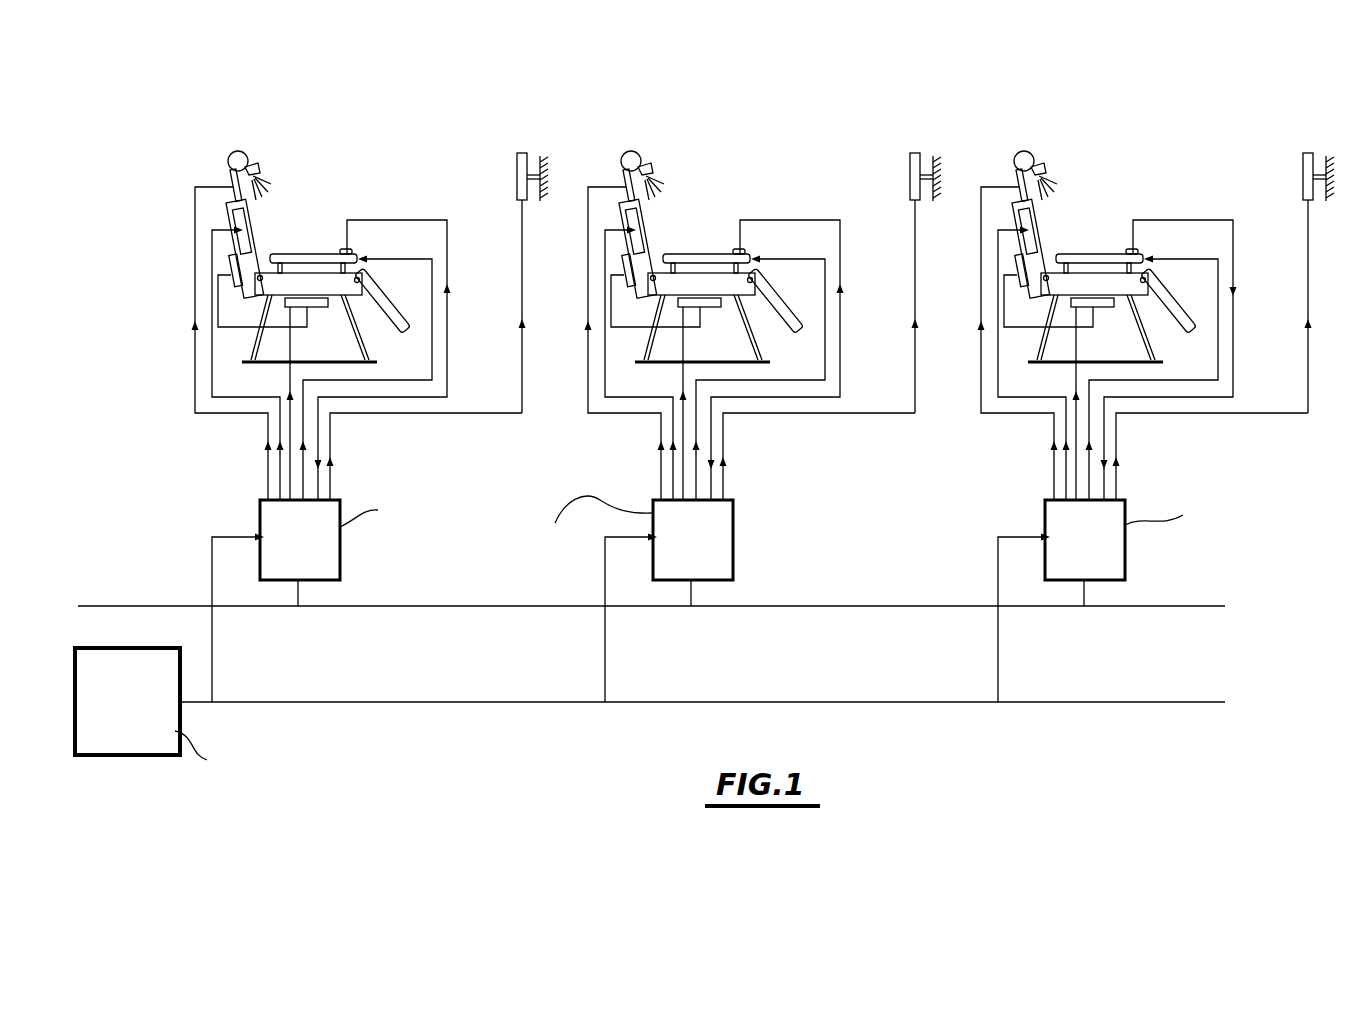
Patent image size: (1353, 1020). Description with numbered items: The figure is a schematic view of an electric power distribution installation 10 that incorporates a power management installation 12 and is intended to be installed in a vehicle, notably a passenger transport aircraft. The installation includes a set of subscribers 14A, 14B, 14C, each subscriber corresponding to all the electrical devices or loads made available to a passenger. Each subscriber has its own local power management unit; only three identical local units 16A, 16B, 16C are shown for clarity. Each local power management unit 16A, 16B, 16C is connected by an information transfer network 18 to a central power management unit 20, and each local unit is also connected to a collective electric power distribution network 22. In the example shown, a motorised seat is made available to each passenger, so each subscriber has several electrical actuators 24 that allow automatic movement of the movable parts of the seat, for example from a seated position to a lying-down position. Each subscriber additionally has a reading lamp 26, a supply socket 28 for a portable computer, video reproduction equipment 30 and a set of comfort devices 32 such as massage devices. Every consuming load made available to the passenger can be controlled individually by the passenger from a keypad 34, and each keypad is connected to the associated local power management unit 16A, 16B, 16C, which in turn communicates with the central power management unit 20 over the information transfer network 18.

The electric power distribution installation 10 is at (236, 108).
The power management installation 12 is at (780, 571).
The subscriber 14A is at (333, 181).
The subscriber 14B is at (726, 181).
The subscriber 14C is at (1119, 181).
The local power management unit 16A is at (400, 537).
The local power management unit 16B is at (644, 538).
The local power management unit 16C is at (1181, 511).
The information transfer network 18 is at (380, 703).
The central power management unit 20 is at (226, 745).
The collective electric power distribution network 22 is at (1162, 606).
The electrical actuators 24 is at (229, 285).
The reading lamp 26 is at (254, 168).
The supply socket 28 is at (357, 253).
The video reproduction equipment 30 is at (522, 150).
The set of comfort devices 32 is at (253, 239).
The keypad 34 is at (341, 252).